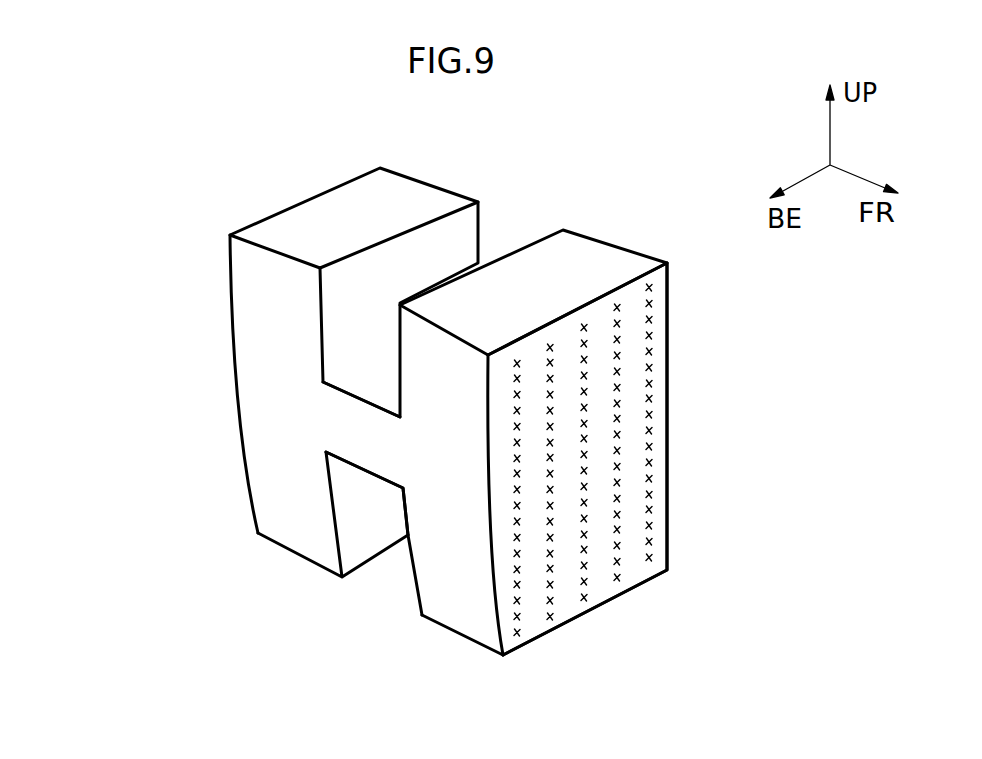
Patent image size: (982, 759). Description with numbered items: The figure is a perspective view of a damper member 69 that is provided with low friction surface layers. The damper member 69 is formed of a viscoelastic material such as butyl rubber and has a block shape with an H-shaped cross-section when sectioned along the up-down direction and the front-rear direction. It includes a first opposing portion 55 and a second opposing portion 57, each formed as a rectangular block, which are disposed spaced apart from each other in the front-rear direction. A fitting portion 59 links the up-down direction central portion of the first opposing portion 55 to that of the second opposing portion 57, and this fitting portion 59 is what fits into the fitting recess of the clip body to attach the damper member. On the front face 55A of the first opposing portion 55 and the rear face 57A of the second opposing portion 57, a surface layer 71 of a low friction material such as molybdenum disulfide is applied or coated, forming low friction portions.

The damper member 69 is at (160, 185).
The second opposing portion 57 is at (250, 421).
The rear face 57A is at (230, 358).
The fitting portion 59 is at (375, 437).
The first opposing portion 55 is at (609, 481).
The front face 55A is at (631, 536).
The surface layer 71 is at (590, 563).